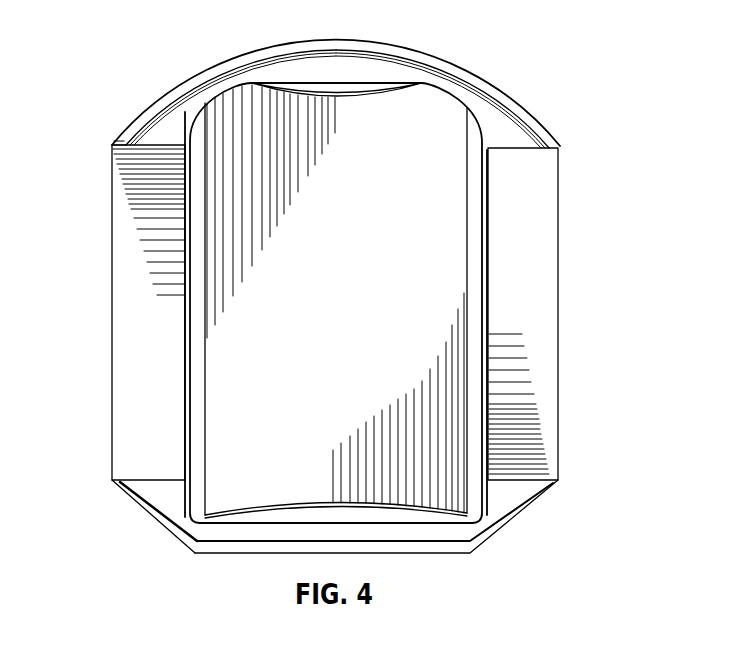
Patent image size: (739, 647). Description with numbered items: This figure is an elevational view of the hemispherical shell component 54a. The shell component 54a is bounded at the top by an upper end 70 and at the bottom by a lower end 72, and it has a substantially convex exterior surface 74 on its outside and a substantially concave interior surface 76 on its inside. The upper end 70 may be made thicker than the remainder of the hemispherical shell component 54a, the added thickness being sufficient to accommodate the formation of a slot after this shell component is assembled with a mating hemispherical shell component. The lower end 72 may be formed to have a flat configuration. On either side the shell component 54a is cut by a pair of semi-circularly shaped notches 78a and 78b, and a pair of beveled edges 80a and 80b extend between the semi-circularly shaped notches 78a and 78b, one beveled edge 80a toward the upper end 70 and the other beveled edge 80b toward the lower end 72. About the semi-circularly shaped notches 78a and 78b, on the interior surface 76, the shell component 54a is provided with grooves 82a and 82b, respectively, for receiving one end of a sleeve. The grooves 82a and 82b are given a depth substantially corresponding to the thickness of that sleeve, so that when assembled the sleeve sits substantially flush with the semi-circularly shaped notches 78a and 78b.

The upper end 70 is at (347, 42).
The hemispherical shell component 54a is at (147, 110).
The substantially convex exterior surface 74 is at (526, 110).
The beveled edge 80a is at (183, 112).
The substantially concave interior surface 76 is at (213, 200).
The semi-circularly shaped notch 78a is at (128, 358).
The semi-circularly shaped notch 78b is at (543, 360).
The groove 82a is at (183, 420).
The groove 82b is at (489, 422).
The beveled edge 80b is at (147, 488).
The lower end 72 is at (428, 553).